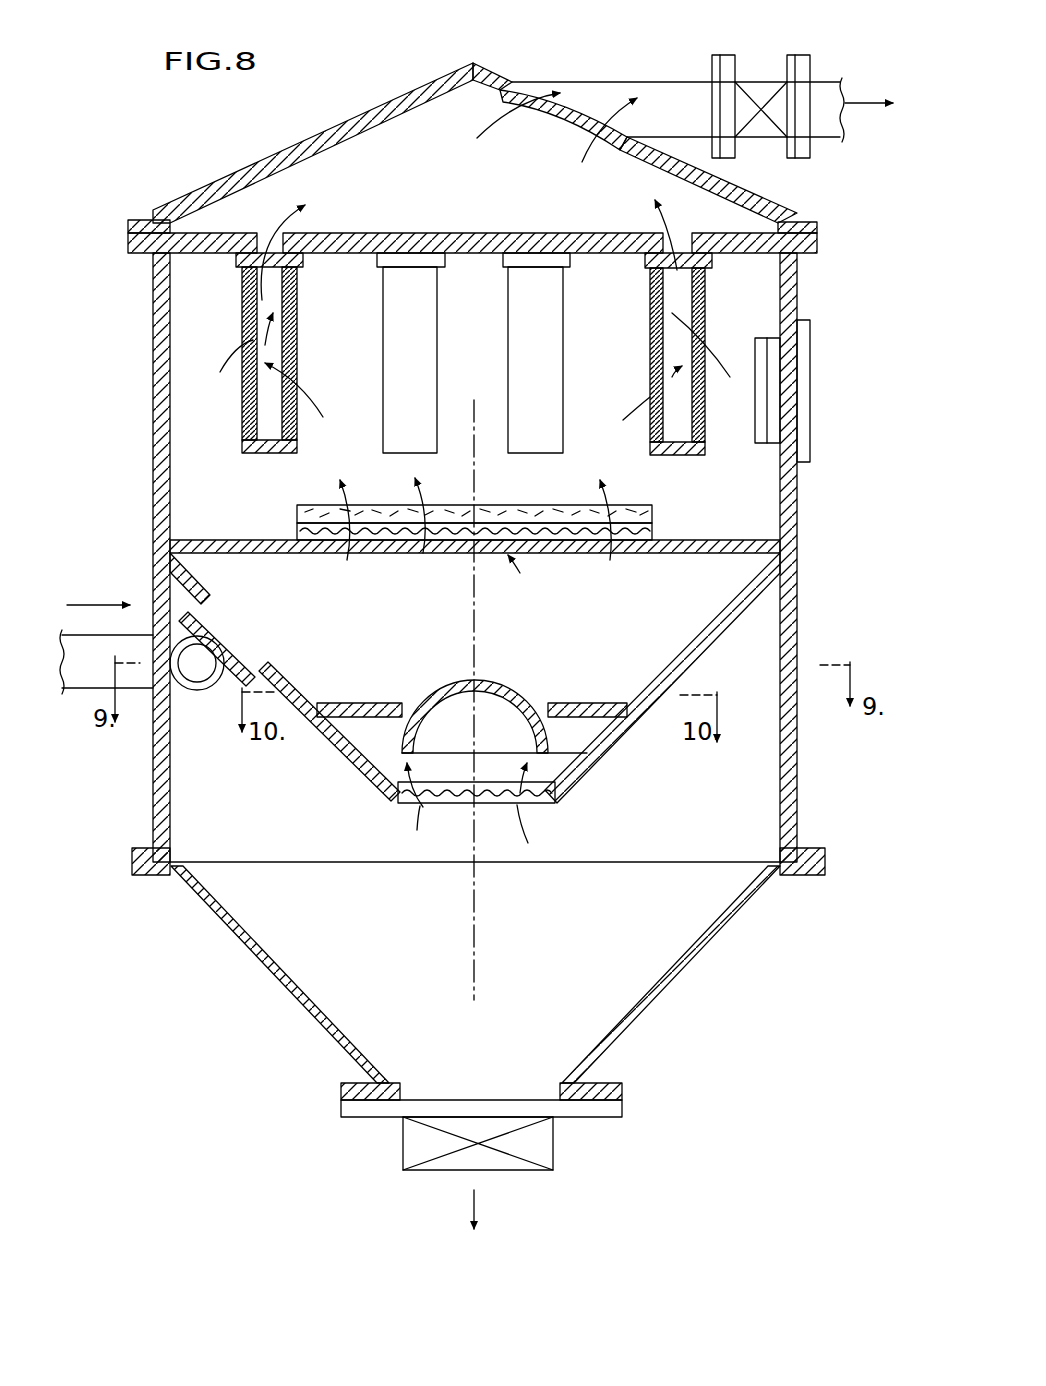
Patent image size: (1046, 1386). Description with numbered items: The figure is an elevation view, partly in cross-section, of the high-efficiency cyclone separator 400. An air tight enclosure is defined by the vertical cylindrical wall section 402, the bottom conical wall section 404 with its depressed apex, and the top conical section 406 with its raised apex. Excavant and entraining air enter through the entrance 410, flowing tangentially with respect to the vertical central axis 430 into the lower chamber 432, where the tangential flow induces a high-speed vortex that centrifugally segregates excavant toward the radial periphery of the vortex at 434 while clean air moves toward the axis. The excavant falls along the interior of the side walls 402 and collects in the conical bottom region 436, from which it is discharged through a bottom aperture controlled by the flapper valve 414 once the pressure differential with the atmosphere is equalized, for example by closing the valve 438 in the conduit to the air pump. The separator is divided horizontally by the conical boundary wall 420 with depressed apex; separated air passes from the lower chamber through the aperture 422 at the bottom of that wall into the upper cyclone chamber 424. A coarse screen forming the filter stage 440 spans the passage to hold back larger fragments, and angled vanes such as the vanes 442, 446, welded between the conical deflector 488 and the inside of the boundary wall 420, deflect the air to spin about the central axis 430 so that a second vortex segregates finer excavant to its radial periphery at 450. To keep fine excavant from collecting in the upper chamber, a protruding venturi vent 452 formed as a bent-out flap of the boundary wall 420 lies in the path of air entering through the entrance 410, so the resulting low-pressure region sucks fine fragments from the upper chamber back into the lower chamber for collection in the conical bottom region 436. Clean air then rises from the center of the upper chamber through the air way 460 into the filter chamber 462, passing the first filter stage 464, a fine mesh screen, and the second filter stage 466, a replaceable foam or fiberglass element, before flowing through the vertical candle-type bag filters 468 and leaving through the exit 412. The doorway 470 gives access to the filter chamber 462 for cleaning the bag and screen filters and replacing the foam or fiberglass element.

The high-efficiency cyclone separator 400 is at (378, 88).
The vertical cylindrical wall section 402 is at (153, 340).
The bottom conical wall section 404 is at (300, 1010).
The top conical section 406 is at (238, 162).
The entrance 410 is at (222, 690).
The exit 412 is at (590, 96).
The flapper valve 414 is at (410, 1145).
The conical boundary wall 420 is at (700, 652).
The aperture 422 is at (458, 813).
The upper cyclone chamber 424 is at (390, 617).
The vertical central axis 430 is at (480, 968).
The lower chamber 432 is at (294, 827).
The radial periphery of the vortex 434 is at (730, 818).
The conical bottom region 436 is at (383, 957).
The valve 438 is at (770, 80).
The filter stage 440 is at (533, 810).
The angled vane 442 is at (375, 687).
The angled vane 446 is at (590, 718).
The radial periphery of the upper vortex 450 is at (705, 610).
The protruding venturi vent 452 is at (245, 628).
The air way 460 is at (510, 560).
The filter chamber 462 is at (544, 489).
The first filter stage 464 is at (655, 530).
The second filter stage 466 is at (638, 503).
The candle-type bag filters 468 is at (267, 405).
The doorway 470 is at (808, 378).
The conical deflector 488 is at (512, 683).